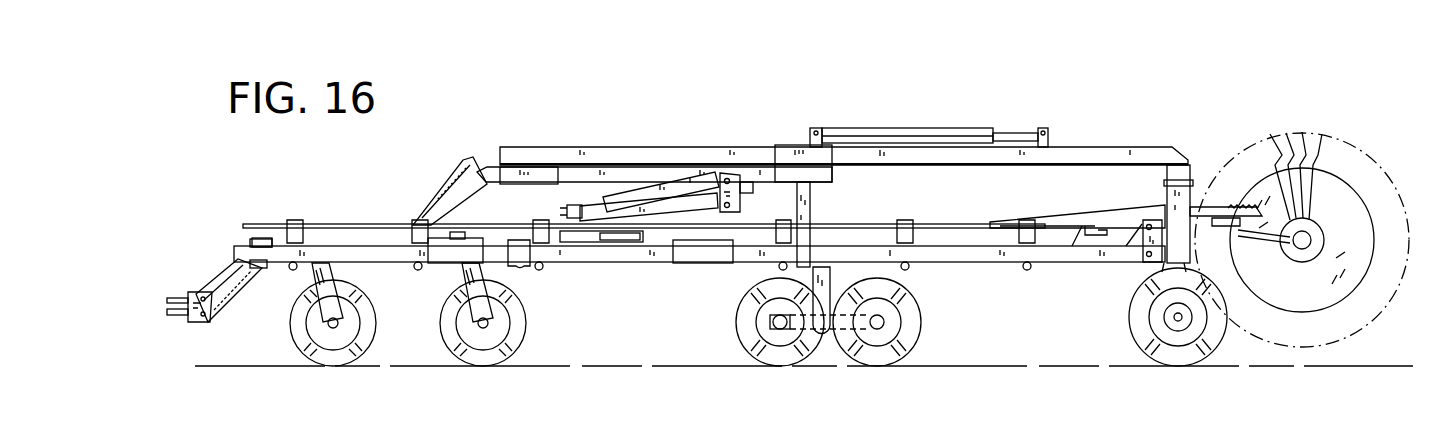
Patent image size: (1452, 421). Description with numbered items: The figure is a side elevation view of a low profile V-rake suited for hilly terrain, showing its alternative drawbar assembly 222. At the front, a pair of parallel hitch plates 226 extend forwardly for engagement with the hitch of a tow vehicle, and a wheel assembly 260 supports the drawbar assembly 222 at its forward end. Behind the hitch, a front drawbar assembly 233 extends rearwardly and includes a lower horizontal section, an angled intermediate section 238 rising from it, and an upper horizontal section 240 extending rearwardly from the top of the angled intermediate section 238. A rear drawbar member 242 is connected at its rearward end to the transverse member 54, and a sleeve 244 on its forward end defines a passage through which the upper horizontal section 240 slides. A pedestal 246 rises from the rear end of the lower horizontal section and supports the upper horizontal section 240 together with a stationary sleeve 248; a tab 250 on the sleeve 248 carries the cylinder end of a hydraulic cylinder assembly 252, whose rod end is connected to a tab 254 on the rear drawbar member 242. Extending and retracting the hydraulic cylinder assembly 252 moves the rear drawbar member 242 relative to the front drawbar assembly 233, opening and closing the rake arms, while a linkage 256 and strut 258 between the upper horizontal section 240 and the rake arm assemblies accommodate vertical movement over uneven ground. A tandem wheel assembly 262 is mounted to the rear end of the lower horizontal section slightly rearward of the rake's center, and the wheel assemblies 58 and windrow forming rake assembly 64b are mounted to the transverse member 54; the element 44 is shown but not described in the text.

The drawbar assembly 222 is at (766, 81).
The hitch plates 226 is at (183, 296).
The front drawbar assembly 233 is at (574, 156).
The angled intermediate section 238 is at (438, 203).
The upper horizontal section 240 is at (496, 163).
The rear drawbar member 242 is at (685, 147).
The sleeve 244 is at (541, 185).
The pedestal 246 is at (812, 208).
The stationary sleeve 248 is at (780, 146).
The tab 250 is at (823, 129).
The hydraulic cylinder assembly 252 is at (941, 127).
The tab 254 is at (1047, 127).
The linkage 256 is at (620, 186).
The strut 258 is at (616, 190).
The wheel assembly 260 is at (277, 320).
The tandem wheel assembly 262 is at (936, 308).
The tool bar 44 is at (946, 222).
The transverse member 54 is at (1191, 172).
The wheel assemblies 58 is at (1117, 326).
The windrow forming rake assembly 64b is at (1361, 134).